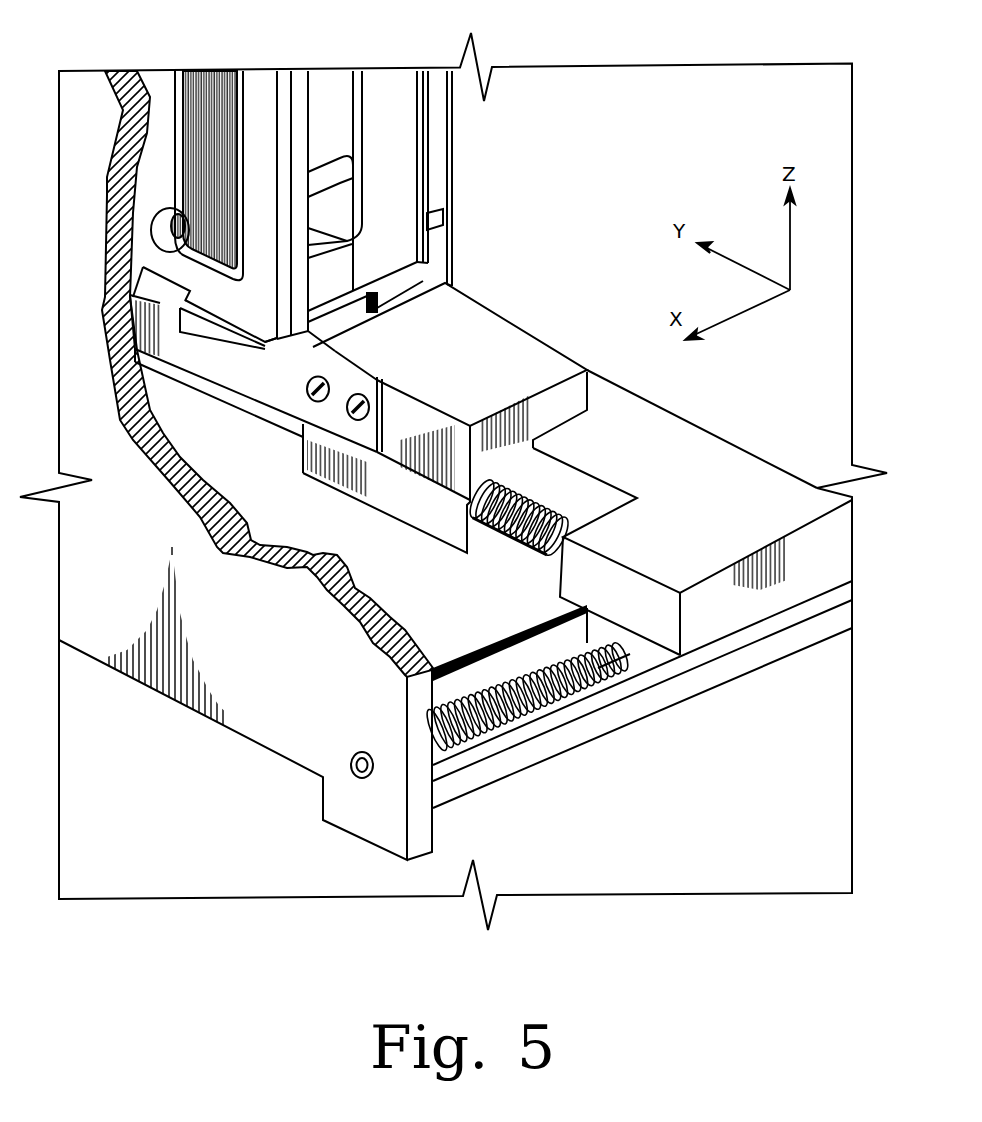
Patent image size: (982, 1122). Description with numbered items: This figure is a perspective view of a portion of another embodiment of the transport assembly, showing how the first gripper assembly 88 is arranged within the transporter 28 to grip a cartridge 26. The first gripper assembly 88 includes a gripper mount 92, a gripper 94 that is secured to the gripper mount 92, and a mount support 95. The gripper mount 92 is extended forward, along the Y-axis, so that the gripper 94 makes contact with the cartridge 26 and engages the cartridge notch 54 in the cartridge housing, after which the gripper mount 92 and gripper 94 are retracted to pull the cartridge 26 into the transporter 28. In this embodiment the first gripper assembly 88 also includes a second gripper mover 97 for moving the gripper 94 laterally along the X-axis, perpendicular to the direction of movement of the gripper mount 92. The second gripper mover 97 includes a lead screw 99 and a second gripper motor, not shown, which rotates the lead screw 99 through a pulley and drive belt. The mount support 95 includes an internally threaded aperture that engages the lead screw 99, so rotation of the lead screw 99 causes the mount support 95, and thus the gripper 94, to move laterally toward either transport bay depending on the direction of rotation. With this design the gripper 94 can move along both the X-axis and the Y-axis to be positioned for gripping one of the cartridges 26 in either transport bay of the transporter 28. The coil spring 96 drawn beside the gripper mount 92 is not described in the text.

The cartridge 26 is at (253, 95).
The transporter 28 is at (152, 733).
The cartridge notch 54 is at (176, 303).
The first gripper assembly 88 is at (798, 663).
The gripper mount 92 is at (400, 473).
The gripper 94 is at (283, 373).
The mount support 95 is at (717, 473).
The compression spring 96 is at (527, 553).
The second gripper mover 97 is at (618, 682).
The lead screw 99 is at (530, 710).